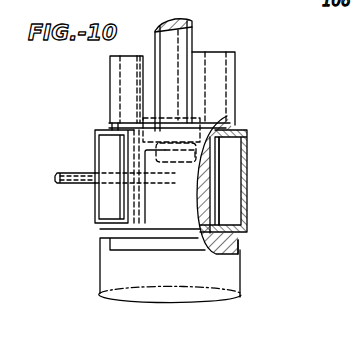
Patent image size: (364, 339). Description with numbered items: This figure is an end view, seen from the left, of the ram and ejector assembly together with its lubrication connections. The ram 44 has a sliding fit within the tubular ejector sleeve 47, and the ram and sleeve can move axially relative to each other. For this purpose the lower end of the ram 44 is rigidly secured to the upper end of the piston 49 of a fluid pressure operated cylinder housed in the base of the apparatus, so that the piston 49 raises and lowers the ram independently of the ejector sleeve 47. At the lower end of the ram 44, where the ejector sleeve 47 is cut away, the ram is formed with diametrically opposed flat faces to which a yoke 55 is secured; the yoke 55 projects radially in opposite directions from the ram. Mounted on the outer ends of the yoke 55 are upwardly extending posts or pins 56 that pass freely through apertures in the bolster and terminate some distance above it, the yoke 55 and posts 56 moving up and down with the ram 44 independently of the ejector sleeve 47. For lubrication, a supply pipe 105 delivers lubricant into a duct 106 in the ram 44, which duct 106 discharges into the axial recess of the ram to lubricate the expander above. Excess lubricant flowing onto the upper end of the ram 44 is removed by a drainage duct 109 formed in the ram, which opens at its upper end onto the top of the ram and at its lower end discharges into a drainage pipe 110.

The ram 44 is at (200, 208).
The tubular ejector sleeve 47 is at (236, 78).
The piston 49 is at (241, 274).
The yoke 55 is at (247, 133).
The posts or pins 56 is at (186, 34).
The supply pipe 105 is at (78, 186).
The duct 106 is at (241, 161).
The drainage duct 109 is at (133, 85).
The drainage pipe 110 is at (62, 171).